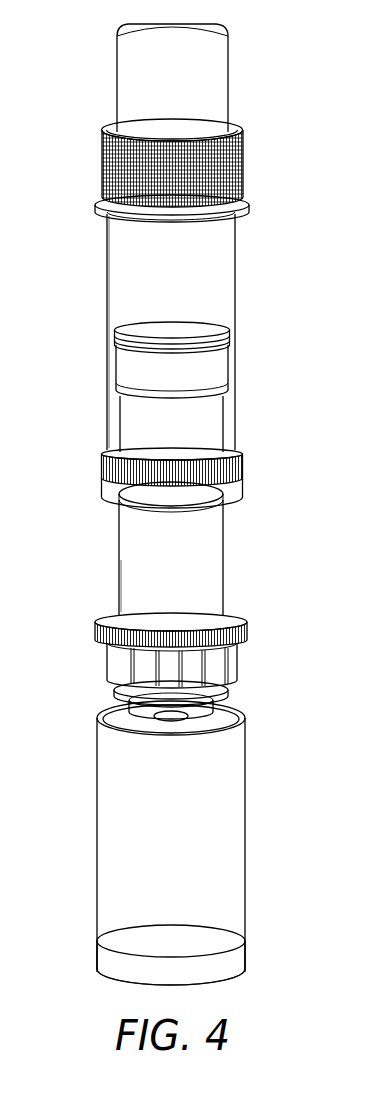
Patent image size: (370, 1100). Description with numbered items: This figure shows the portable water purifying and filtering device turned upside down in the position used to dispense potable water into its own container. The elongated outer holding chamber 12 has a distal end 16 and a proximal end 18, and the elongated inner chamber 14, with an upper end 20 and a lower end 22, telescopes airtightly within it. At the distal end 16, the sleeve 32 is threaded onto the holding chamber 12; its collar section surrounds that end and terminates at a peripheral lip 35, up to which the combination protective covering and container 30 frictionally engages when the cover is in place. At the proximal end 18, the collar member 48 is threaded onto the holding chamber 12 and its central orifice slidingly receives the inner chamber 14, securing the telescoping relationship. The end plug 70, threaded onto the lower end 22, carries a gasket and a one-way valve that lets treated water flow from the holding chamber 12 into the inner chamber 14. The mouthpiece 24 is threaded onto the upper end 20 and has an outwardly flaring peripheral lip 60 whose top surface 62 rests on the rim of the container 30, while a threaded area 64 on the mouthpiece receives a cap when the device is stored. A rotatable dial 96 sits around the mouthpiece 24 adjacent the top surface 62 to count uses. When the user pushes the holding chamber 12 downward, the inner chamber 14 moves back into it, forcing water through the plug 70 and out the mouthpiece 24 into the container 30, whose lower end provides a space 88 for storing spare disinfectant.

The holding chamber 12 is at (230, 278).
The inner chamber 14 is at (130, 553).
The distal end 16 is at (120, 222).
The proximal end 18 is at (115, 420).
The upper end 20 is at (213, 405).
The lower end 22 is at (210, 603).
The mouthpiece 24 is at (232, 690).
The protective covering and container 30 is at (212, 72).
The sleeve 32 is at (105, 172).
The peripheral lip 35 is at (242, 218).
The collar member 48 is at (232, 470).
The peripheral lip section 60 is at (245, 635).
The top surface 62 is at (245, 650).
The threaded area 64 is at (125, 693).
The end plug 70 is at (130, 363).
The space 88 is at (228, 965).
The dial 96 is at (125, 657).